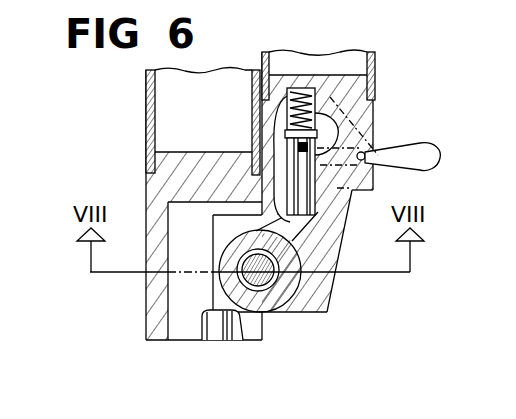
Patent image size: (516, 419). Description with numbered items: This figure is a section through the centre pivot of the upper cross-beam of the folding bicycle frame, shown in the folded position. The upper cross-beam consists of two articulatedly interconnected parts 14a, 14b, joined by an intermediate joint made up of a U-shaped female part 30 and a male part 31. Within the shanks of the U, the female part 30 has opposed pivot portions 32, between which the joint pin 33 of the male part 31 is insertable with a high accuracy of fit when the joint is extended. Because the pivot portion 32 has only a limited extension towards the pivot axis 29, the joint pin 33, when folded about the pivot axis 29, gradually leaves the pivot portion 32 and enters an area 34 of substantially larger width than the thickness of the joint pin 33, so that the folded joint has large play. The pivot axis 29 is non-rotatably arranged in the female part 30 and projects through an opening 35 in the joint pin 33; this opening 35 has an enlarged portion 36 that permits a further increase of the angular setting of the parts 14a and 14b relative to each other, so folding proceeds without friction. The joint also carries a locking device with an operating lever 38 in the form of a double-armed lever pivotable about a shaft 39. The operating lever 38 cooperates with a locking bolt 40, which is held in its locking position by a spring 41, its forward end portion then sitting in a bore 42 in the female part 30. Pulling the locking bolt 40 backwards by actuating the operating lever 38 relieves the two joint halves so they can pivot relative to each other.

The cross-beam part 14a is at (147, 108).
The cross-beam part 14b is at (373, 93).
The pivot axis 29 is at (258, 278).
The female part 30 is at (192, 177).
The male part 31 is at (335, 92).
The pivot portion 32 is at (177, 283).
The joint pin 33 is at (335, 230).
The area 34 is at (233, 223).
The opening 35 is at (290, 280).
The enlarged portion 36 is at (245, 252).
The operating lever 38 is at (422, 157).
The shaft 39 is at (365, 154).
The locking bolt 40 is at (318, 245).
The spring 41 is at (305, 98).
The bore 42 is at (223, 318).